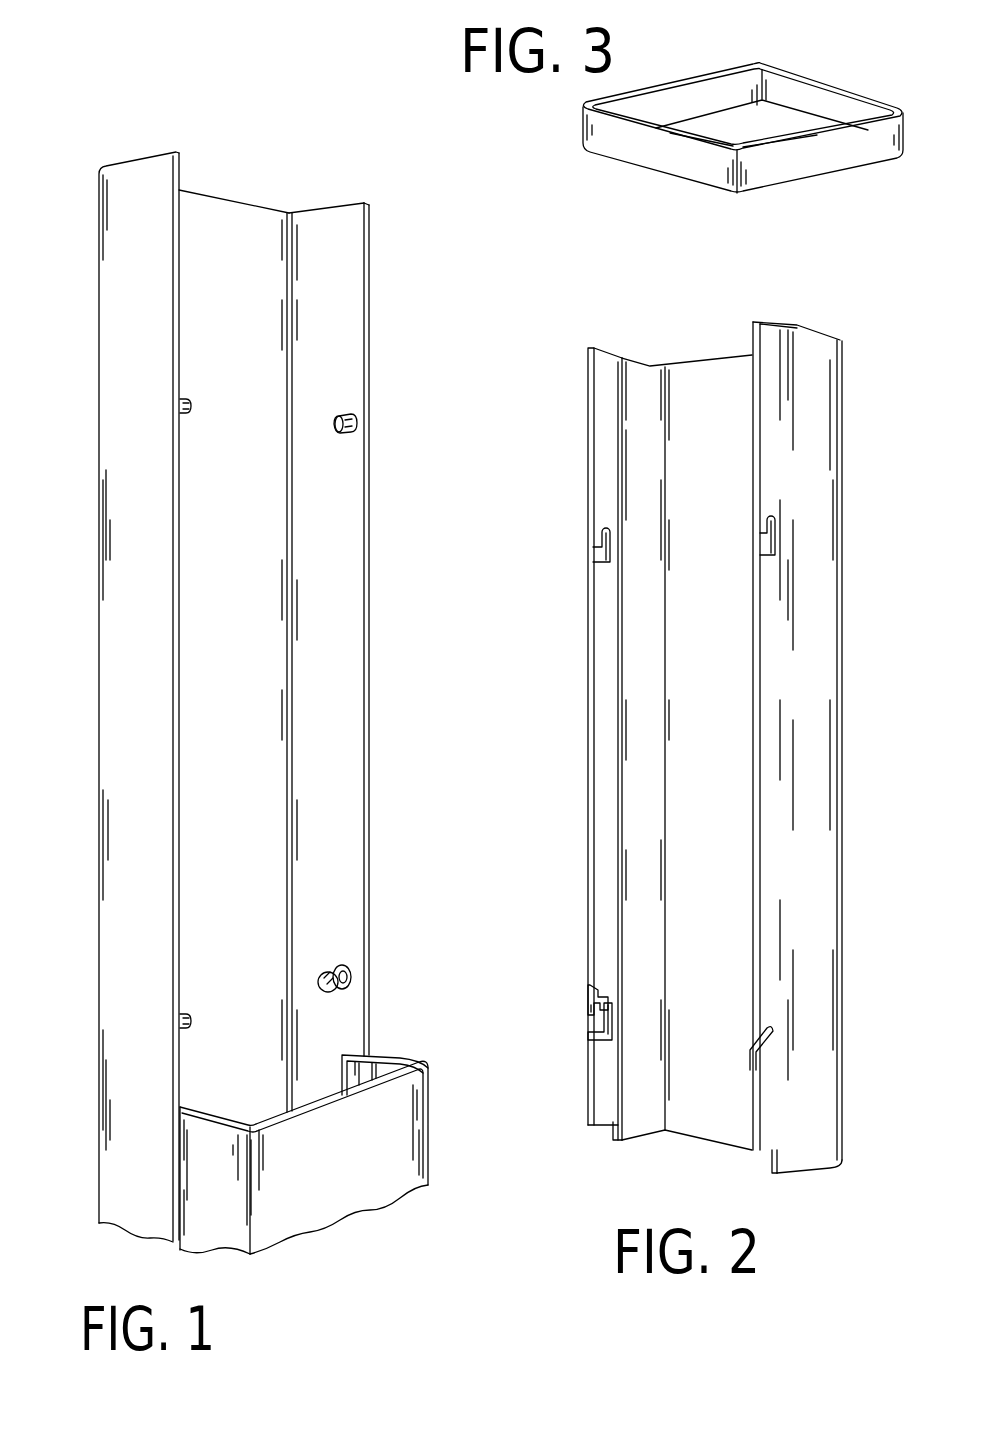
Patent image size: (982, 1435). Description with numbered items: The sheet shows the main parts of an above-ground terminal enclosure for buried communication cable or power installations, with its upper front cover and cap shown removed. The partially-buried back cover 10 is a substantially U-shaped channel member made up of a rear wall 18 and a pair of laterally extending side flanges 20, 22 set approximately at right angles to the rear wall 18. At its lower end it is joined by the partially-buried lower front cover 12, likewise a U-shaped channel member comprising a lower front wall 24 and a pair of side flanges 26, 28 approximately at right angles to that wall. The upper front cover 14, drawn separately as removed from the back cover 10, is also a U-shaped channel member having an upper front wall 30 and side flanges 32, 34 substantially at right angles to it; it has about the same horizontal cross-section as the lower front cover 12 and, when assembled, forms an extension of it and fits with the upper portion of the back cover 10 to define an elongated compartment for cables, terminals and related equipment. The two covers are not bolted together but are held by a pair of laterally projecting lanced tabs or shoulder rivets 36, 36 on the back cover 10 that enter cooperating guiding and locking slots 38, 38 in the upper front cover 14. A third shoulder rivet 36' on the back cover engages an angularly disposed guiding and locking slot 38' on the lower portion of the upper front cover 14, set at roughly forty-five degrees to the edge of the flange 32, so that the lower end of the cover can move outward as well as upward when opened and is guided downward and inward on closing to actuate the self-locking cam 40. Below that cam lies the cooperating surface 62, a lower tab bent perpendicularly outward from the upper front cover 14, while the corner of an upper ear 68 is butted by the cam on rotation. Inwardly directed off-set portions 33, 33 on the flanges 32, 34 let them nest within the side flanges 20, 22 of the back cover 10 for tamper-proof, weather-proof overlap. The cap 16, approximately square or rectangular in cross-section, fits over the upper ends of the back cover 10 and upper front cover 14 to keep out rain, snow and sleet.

In FIG. 1, the back cover 10 is at (244, 684).
In FIG. 1, the lower front cover 12 is at (319, 1145).
In FIG. 2, the upper front cover 14 is at (709, 754).
In FIG. 3, the cap 16 is at (833, 82).
In FIG. 1, the rear wall 18 is at (222, 190).
In FIG. 1, the side flange 20 is at (370, 620).
In FIG. 1, the side flange 22 is at (110, 460).
In FIG. 1, the lower front wall 24 is at (325, 1208).
In FIG. 1, the side flange 26 is at (396, 1058).
In FIG. 1, the side flange 28 is at (206, 1232).
In FIG. 2, the upper front wall 30 is at (705, 360).
In FIG. 2, the side flange 32 is at (828, 760).
In FIG. 2, the inwardly directed off-set portion 33 is at (613, 1143).
In FIG. 2, the side flange 34 is at (595, 703).
In FIG. 1, the lanced tab, pin, or shoulder rivet 36 is at (270, 385).
In FIG. 1, the third lanced tab or shoulder rivet 36' is at (210, 992).
In FIG. 2, the guiding and locking slot 38 is at (655, 544).
In FIG. 2, the angularly disposed guiding and locking slot 38' is at (736, 1045).
In FIG. 1, the self-locking cam 40 is at (324, 972).
In FIG. 2, the cooperating surface 62 is at (604, 1034).
In FIG. 2, the upper ear 68 is at (592, 1000).